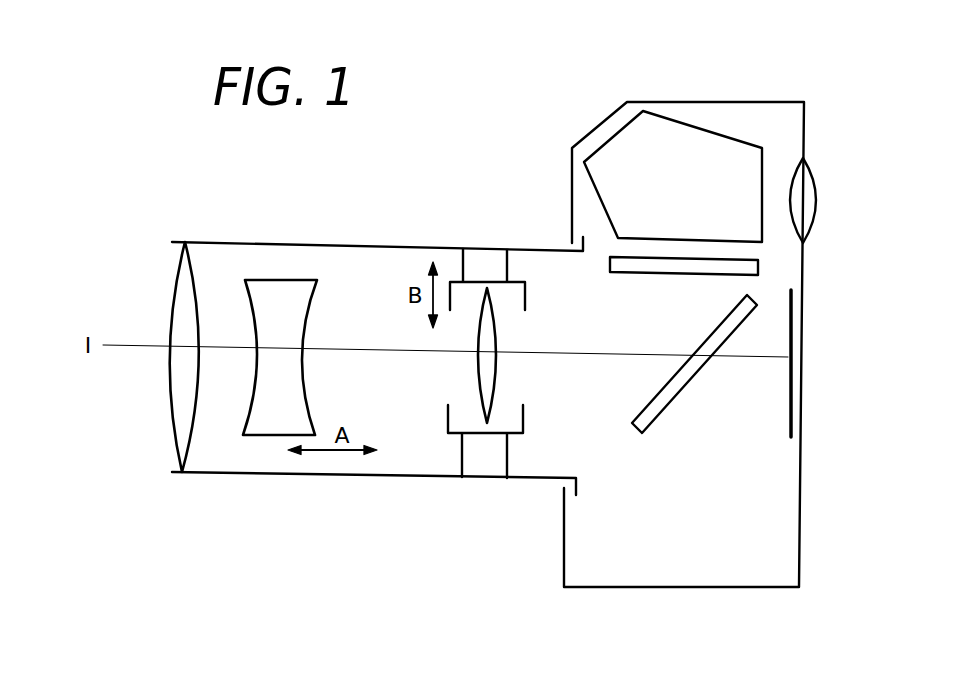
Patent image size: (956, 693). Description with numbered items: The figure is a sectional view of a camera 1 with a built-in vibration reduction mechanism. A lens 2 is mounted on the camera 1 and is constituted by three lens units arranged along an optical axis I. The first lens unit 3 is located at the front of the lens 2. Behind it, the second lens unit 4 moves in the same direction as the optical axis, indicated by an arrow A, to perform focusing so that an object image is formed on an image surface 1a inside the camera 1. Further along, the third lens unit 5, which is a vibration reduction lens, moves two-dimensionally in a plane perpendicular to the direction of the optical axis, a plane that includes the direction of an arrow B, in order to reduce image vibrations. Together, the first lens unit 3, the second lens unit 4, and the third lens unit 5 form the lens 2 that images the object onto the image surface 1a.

The camera 1 is at (690, 587).
The image surface 1a is at (791, 437).
The lens 2 is at (320, 258).
The first lens unit 3 is at (178, 452).
The second lens unit 4 is at (280, 430).
The third lens unit 5 is at (472, 400).